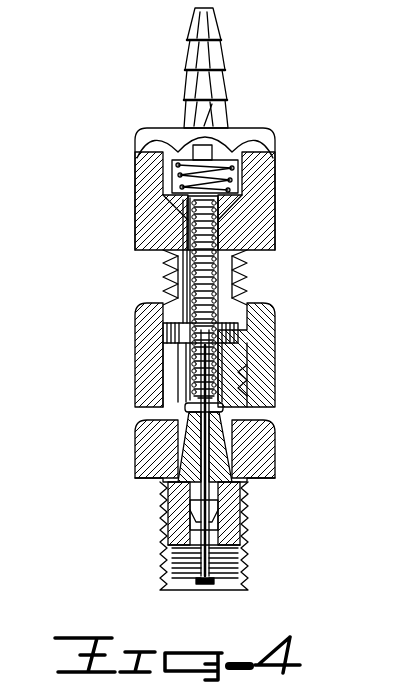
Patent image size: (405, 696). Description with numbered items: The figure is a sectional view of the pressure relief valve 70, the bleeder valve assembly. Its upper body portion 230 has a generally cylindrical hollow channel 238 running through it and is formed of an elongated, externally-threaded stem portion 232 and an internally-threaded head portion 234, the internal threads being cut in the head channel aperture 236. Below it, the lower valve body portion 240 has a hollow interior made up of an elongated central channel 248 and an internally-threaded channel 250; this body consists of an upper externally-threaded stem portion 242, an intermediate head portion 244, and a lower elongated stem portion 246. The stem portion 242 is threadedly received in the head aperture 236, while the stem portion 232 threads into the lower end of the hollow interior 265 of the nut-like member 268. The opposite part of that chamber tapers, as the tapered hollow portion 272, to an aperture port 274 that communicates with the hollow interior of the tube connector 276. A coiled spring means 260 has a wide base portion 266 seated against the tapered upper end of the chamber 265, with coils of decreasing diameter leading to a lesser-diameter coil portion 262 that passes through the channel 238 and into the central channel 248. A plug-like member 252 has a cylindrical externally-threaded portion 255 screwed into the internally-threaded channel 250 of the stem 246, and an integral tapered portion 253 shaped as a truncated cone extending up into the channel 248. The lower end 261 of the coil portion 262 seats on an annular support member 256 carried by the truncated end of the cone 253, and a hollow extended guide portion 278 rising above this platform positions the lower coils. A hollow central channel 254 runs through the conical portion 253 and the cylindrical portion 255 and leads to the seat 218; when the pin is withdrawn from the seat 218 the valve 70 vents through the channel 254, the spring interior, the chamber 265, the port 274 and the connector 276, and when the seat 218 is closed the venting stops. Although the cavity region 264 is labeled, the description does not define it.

The pressure relief valve 70 is at (113, 143).
The seat 218 is at (205, 586).
The upper body portion 230 is at (272, 295).
The externally-threaded stem portion 232 is at (262, 272).
The head portion 234 is at (275, 325).
The head channel aperture 236 is at (262, 375).
The channel 238 is at (163, 262).
The lower valve body portion 240 is at (290, 499).
The upper externally-threaded stem portion 242 is at (163, 365).
The intermediate head portion 244 is at (278, 462).
The lower elongated stem portion 246 is at (250, 566).
The elongated central channel 248 is at (170, 413).
The internally-threaded channel 250 is at (185, 555).
The plug-like member 252 is at (178, 455).
The tapered portion 253 is at (280, 437).
The hollow central channel 254 is at (185, 520).
The externally-threaded portion 255 is at (232, 516).
The annular support member 256 is at (178, 393).
The coiled spring means 260 is at (262, 262).
The lower end 261 is at (268, 413).
The coil portion 262 is at (163, 284).
The cavity 264 is at (198, 212).
The hollow interior 265 is at (275, 172).
The base portion 266 is at (152, 128).
The nut-like member 268 is at (283, 203).
The tapered hollow portion 272 is at (182, 128).
The aperture port 274 is at (208, 127).
The tube connector 276 is at (225, 60).
The guide portion 278 is at (165, 335).